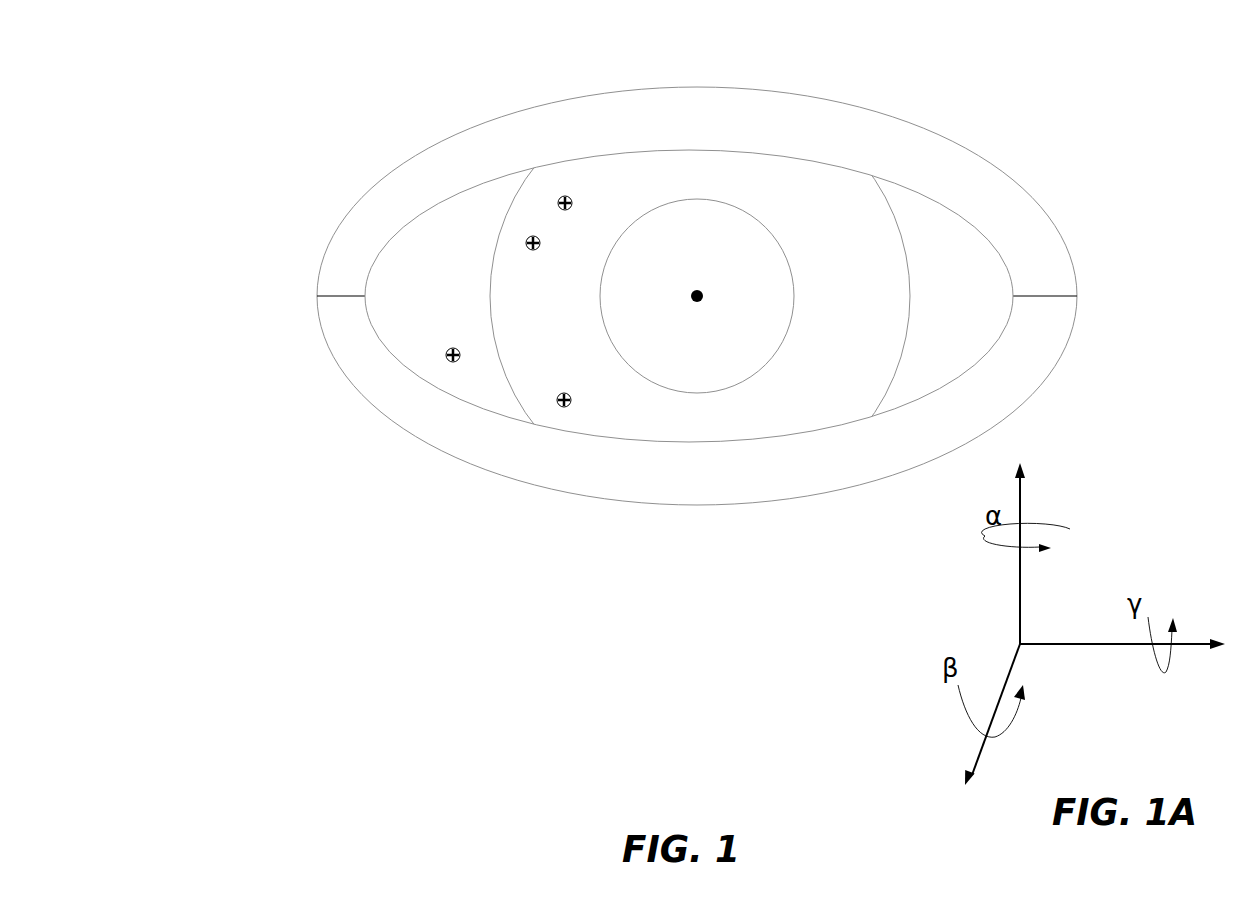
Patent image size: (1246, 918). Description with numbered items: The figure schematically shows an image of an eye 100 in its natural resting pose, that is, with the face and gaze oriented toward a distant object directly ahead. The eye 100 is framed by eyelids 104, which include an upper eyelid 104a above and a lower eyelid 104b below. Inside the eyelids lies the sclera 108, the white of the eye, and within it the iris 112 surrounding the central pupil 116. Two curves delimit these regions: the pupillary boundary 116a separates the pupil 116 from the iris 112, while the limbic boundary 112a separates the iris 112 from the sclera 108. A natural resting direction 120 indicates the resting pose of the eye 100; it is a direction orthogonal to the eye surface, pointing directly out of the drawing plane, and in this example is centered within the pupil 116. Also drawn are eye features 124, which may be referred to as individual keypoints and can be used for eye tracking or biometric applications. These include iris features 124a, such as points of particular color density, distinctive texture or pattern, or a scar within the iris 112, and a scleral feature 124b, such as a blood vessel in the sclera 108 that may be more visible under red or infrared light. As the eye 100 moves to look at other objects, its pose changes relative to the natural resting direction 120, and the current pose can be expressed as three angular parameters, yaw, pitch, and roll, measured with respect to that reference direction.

In FIG. 1, the eye 100 is at (194, 136).
In FIG. 1, the eyelids 104 is at (323, 248).
In FIG. 1, the upper eyelid 104a is at (430, 152).
In FIG. 1, the lower eyelid 104b is at (408, 401).
In FIG. 1, the sclera 108 is at (955, 325).
In FIG. 1, the iris 112 is at (553, 306).
In FIG. 1, the limbic boundary 112a is at (908, 322).
In FIG. 1, the pupil 116 is at (772, 297).
In FIG. 1, the pupillary boundary 116a is at (787, 337).
In FIG. 1, the natural resting direction 120 is at (703, 297).
In FIG. 1A, the natural resting direction 120 is at (1103, 645).
In FIG. 1, the eye features 124 is at (452, 360).
In FIG. 1, the iris features 124a is at (533, 236).
In FIG. 1, the scleral feature 124b is at (450, 355).